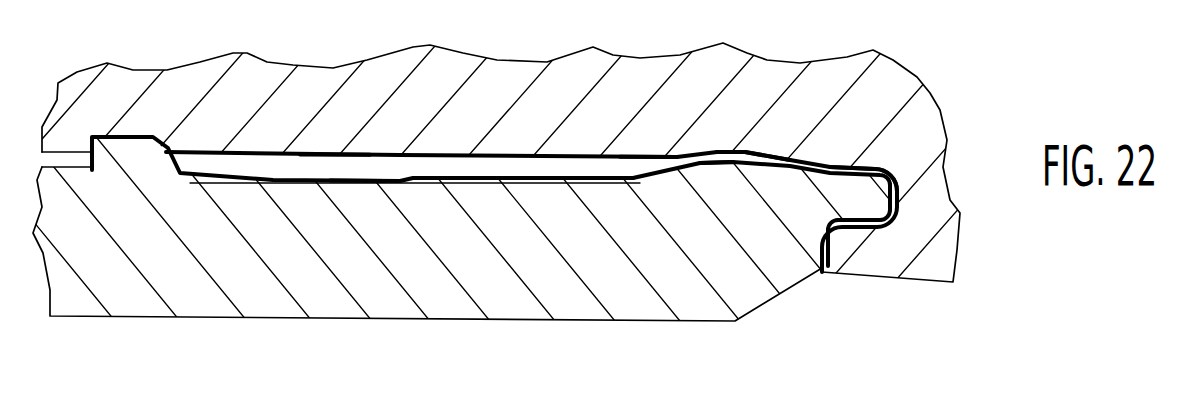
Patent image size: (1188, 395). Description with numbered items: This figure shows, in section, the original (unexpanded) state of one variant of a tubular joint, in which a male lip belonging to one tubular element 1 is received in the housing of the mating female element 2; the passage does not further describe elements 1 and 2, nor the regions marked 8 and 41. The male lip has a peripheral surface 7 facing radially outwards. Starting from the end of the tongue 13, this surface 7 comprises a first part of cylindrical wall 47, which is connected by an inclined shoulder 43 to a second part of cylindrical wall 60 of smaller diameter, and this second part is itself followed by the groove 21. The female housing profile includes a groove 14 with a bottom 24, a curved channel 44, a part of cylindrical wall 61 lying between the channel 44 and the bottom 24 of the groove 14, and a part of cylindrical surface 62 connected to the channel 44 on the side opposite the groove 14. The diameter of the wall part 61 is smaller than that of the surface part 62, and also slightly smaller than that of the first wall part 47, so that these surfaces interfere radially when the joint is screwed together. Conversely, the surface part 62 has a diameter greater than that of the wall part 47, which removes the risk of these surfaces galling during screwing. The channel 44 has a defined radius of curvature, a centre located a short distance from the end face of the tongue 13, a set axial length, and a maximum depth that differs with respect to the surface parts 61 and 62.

The lower tool part 1 is at (781, 296).
The upper tool part 2 is at (940, 94).
The peripheral surface 7 is at (451, 170).
The forming gap 8 is at (353, 167).
The tongue 13 is at (866, 197).
The groove 14 is at (887, 206).
The groove 21 is at (330, 178).
The bottom of the groove 24 is at (876, 168).
The lower die projection 41 is at (730, 161).
The inclined shoulder 43 is at (650, 177).
The channel 44 is at (771, 158).
The first part of cylindrical wall 47 is at (733, 158).
The second part of cylindrical wall 60 is at (520, 176).
The part of cylindrical wall 61 is at (870, 190).
The part of cylindrical surface 62 is at (597, 178).